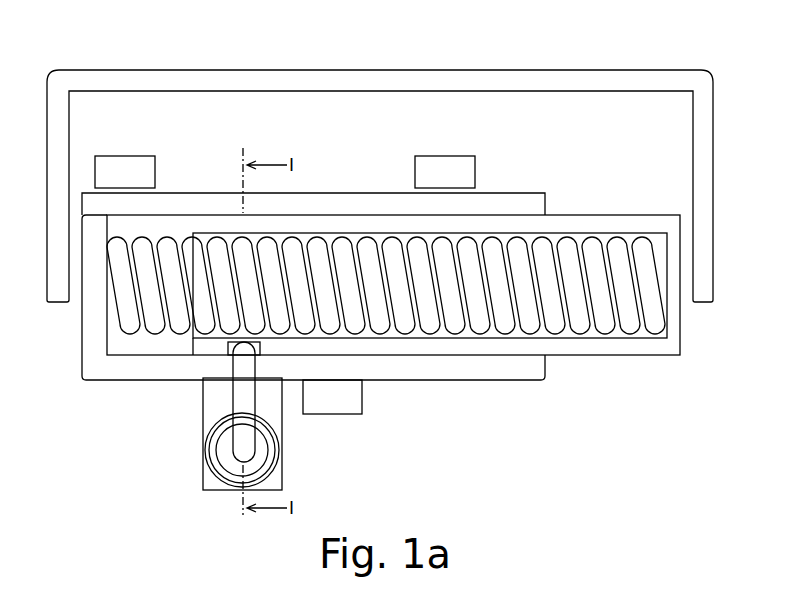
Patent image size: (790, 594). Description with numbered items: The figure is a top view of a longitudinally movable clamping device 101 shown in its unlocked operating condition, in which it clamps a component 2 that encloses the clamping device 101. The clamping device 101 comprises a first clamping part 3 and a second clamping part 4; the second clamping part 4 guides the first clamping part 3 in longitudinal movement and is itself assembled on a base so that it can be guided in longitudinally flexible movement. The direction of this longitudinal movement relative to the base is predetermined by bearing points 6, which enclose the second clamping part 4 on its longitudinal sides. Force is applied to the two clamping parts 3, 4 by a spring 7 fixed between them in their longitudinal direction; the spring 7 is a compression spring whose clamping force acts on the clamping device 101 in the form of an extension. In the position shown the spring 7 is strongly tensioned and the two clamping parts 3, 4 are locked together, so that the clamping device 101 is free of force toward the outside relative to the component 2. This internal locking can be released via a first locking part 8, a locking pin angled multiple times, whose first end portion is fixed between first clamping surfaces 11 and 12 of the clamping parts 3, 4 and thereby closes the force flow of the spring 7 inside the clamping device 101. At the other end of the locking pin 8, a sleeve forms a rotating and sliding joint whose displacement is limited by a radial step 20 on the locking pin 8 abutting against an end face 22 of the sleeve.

The clamping device 101 is at (528, 172).
The component 2 is at (449, 86).
The first clamping part 3 is at (652, 356).
The second clamping part 4 is at (533, 374).
The bearing points 6 is at (124, 168).
The spring 7 is at (593, 243).
The first locking part 8 is at (233, 397).
The first clamping surface 11 is at (230, 346).
The first clamping surface 12 is at (258, 362).
The radial step 20 is at (220, 462).
The end face 22 is at (212, 438).